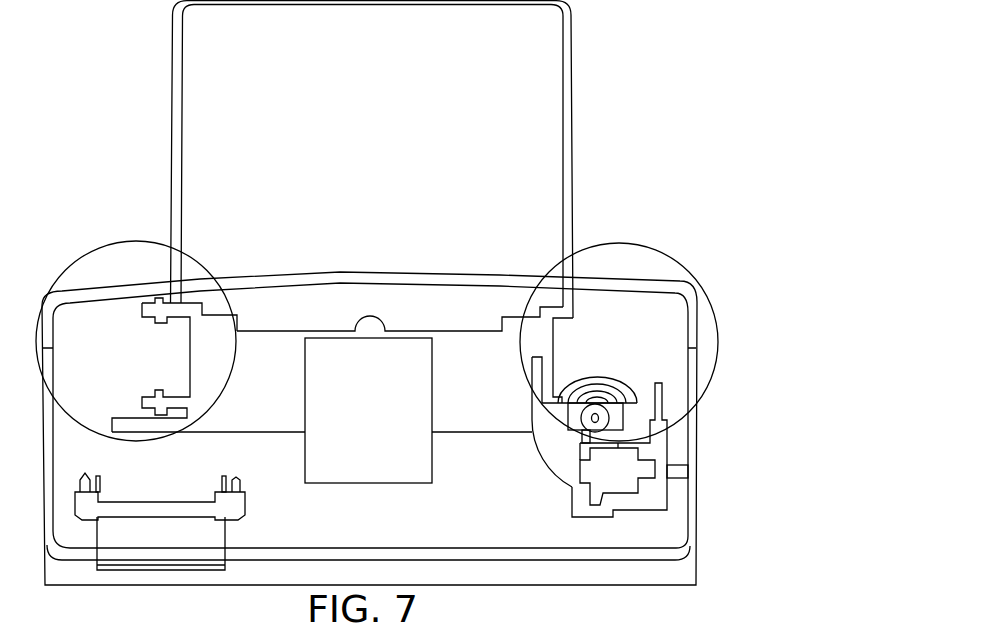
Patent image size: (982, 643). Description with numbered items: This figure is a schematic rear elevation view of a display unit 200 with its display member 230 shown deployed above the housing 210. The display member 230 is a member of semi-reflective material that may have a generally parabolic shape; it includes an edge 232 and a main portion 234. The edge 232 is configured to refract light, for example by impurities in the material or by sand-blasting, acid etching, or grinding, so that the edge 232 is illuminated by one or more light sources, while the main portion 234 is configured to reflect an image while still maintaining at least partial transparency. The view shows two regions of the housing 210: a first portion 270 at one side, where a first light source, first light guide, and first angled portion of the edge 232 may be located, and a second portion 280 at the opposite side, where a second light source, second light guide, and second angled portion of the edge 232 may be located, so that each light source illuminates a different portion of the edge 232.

The display unit 200 is at (718, 232).
The housing 210 is at (697, 503).
The display member 230 is at (588, 67).
The edge 232 is at (572, 151).
The main portion 234 is at (385, 160).
The first portion 270 is at (637, 237).
The second portion 280 is at (108, 237).